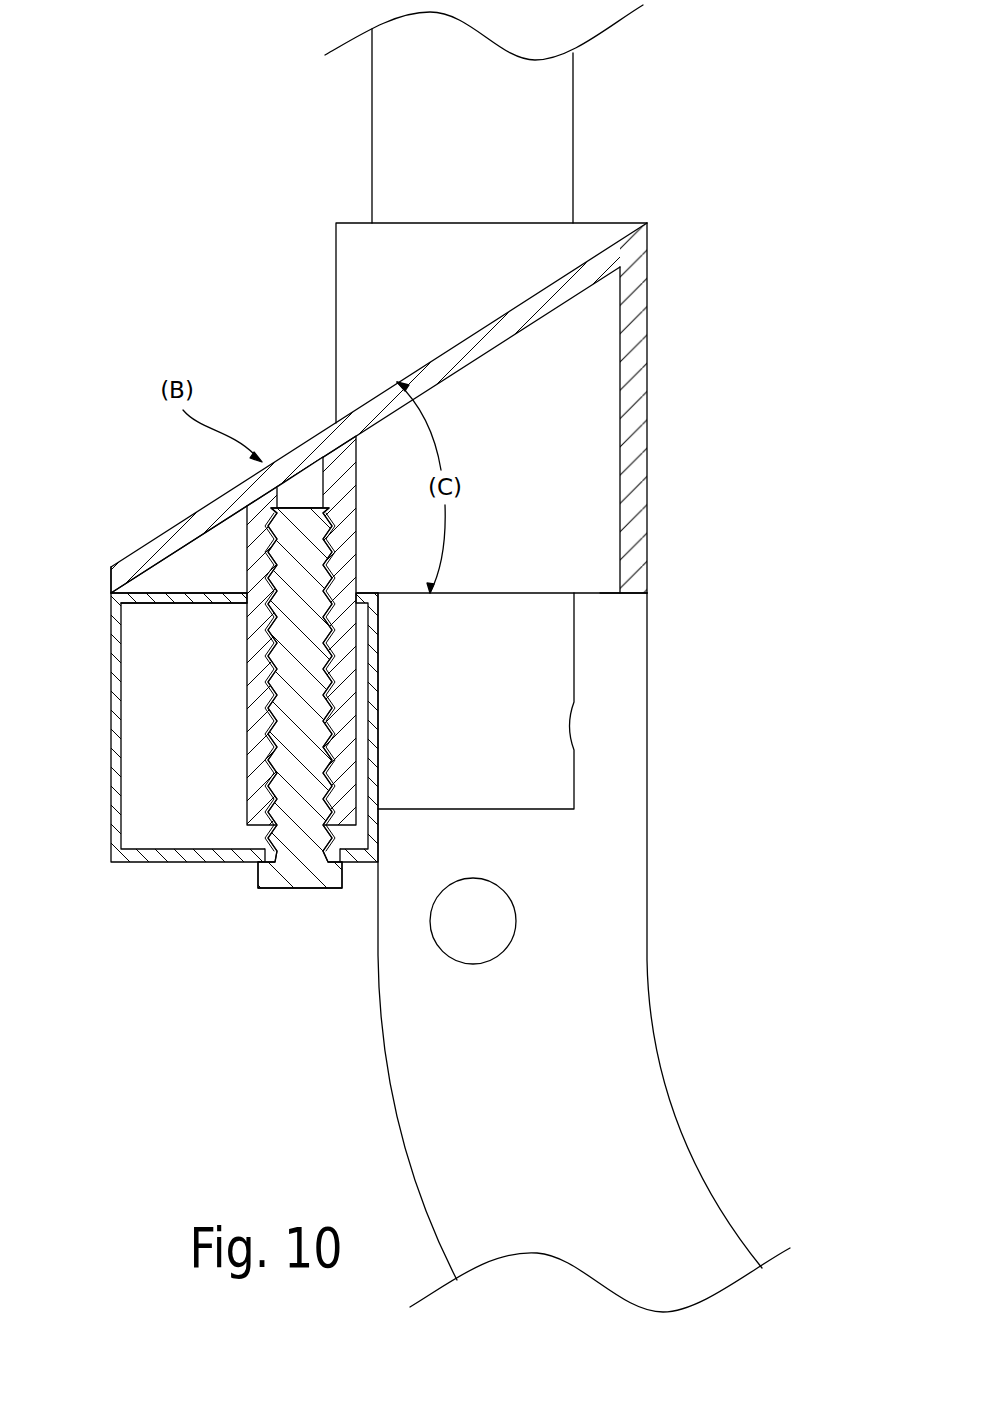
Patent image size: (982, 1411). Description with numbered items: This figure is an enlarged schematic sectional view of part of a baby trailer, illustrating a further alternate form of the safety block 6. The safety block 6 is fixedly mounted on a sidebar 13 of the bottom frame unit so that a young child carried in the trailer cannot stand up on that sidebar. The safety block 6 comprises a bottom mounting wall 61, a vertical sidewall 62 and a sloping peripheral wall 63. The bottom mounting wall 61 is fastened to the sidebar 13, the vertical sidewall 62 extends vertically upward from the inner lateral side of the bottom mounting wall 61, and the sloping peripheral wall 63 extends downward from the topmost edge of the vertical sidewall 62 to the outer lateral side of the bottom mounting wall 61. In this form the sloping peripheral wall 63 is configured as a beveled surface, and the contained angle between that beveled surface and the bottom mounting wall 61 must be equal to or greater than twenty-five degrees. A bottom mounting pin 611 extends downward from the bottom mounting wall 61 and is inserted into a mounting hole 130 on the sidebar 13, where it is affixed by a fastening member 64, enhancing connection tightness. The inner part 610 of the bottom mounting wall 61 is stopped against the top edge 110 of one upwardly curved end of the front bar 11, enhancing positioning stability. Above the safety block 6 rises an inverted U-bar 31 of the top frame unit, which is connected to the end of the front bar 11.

The inverted U-bar 31 is at (573, 143).
The safety block 6 is at (140, 452).
The bottom mounting wall 61 is at (180, 590).
The vertical sidewall 62 is at (647, 350).
The sloping peripheral wall 63 is at (318, 437).
The fastening member 64 is at (293, 890).
The bottom mounting pin 611 is at (247, 717).
The sidebar 13 is at (110, 793).
The mounting hole 130 is at (247, 597).
The top edge 110 is at (590, 593).
The inner part 610 is at (612, 593).
The front bar 11 is at (670, 1090).